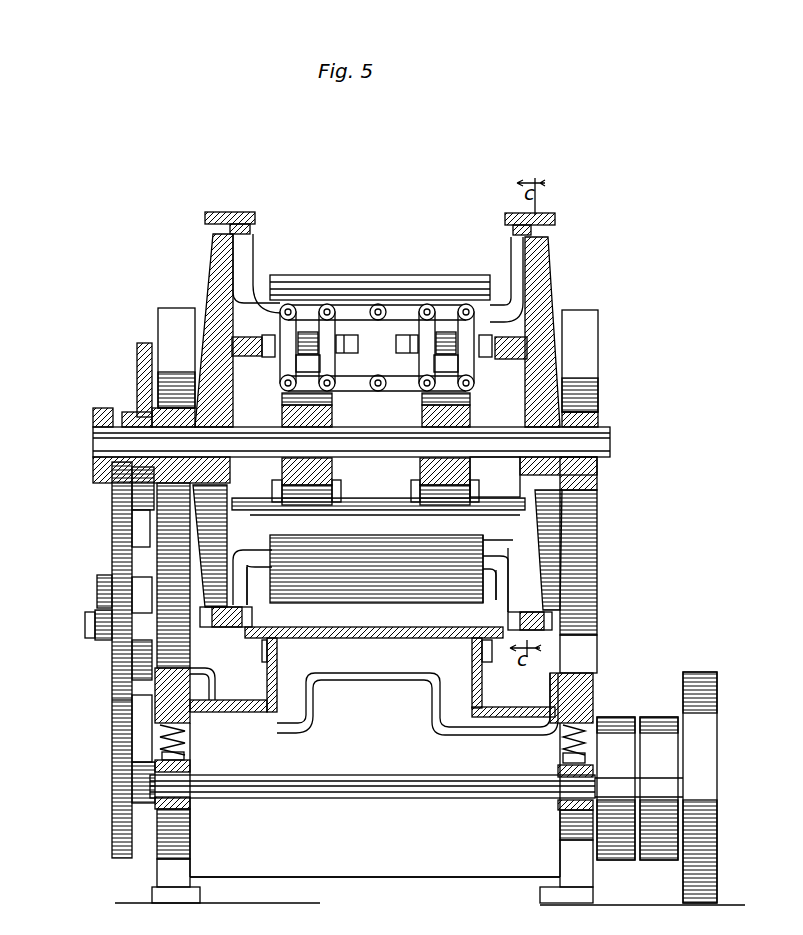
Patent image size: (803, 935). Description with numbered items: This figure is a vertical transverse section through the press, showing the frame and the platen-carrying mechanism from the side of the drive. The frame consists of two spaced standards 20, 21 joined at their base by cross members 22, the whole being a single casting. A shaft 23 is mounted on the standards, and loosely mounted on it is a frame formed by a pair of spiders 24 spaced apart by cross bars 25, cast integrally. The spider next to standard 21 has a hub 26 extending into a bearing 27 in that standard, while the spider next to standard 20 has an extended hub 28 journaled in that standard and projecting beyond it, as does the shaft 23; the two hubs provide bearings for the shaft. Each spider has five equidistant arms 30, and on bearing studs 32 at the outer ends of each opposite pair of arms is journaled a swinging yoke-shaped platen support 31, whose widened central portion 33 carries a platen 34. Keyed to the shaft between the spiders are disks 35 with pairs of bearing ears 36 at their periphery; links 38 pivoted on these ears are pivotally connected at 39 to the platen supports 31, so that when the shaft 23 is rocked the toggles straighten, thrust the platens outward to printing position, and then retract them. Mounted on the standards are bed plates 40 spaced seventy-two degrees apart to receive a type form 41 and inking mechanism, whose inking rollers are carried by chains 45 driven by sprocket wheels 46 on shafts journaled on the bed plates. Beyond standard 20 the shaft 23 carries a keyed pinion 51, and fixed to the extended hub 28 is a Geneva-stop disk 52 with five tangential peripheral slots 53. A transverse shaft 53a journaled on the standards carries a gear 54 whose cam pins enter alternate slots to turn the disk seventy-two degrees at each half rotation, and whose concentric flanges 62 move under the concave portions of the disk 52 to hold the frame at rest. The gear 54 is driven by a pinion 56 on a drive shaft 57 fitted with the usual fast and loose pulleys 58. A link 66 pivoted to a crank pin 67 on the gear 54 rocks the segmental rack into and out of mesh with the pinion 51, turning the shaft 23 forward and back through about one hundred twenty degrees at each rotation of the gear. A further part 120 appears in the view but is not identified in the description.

The standard 20 is at (160, 590).
The standard 21 is at (592, 604).
The cross members 22 is at (375, 860).
The shaft 23 is at (610, 444).
The spiders 24 is at (575, 406).
The cross bars 25 is at (280, 327).
The hub 26 is at (600, 418).
The bearing 27 is at (597, 473).
The extended hub 28 is at (173, 367).
The arms 30 is at (212, 272).
The platen supports 31 is at (274, 307).
The bearing studs 32 is at (242, 214).
The widened central portion 33 is at (392, 308).
The platen 34 is at (410, 283).
The disks 35 is at (382, 419).
The bearing ears 36 is at (425, 400).
The links 38 is at (290, 400).
The pivotal connection 39 is at (306, 330).
The bed plates 40 is at (329, 660).
The type form 41 is at (428, 645).
The chains 45 is at (488, 678).
The sprocket wheels 46 is at (264, 656).
The pinion 51 is at (100, 408).
The Geneva-stop disk 52 is at (142, 345).
The slots 53 is at (132, 548).
The transverse shaft 53a is at (150, 658).
The gear 54 is at (116, 700).
The pinion 56 is at (112, 778).
The drive shaft 57 is at (396, 790).
The fast and loose pulleys 58 is at (657, 718).
The flanges 62 is at (134, 528).
The link 66 is at (96, 590).
The crank pin 67 is at (88, 628).
The plate 120 is at (451, 569).